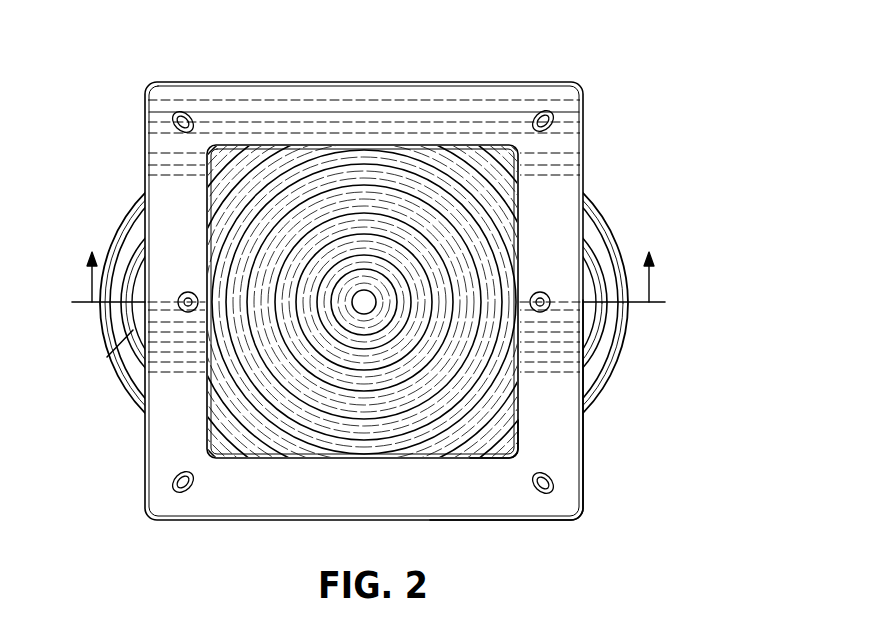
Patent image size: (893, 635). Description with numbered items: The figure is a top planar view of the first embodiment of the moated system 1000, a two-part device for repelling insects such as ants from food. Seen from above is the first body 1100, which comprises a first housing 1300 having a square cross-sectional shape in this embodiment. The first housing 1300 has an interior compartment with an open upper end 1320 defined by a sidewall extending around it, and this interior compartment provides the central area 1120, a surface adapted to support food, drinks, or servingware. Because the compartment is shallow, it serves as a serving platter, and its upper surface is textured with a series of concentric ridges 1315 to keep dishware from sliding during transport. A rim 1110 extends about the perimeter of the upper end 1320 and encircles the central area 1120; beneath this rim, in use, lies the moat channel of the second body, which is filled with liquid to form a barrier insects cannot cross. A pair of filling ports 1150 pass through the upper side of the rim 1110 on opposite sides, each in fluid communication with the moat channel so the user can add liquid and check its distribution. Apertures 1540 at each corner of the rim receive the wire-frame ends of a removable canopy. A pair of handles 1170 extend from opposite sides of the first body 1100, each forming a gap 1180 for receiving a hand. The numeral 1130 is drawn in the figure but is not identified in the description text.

The moated system 1000 is at (634, 81).
The first body 1100 is at (149, 518).
The rim 1110 is at (482, 82).
The central area 1120 is at (372, 183).
The plate edge line 1130 is at (250, 112).
The filling port 1150 is at (546, 293).
The handle 1170 is at (128, 225).
The gap 1180 is at (122, 356).
The first housing 1300 is at (578, 523).
The concentric ridges 1315 is at (520, 434).
The open upper end 1320 is at (248, 460).
The aperture 1540 is at (541, 112).